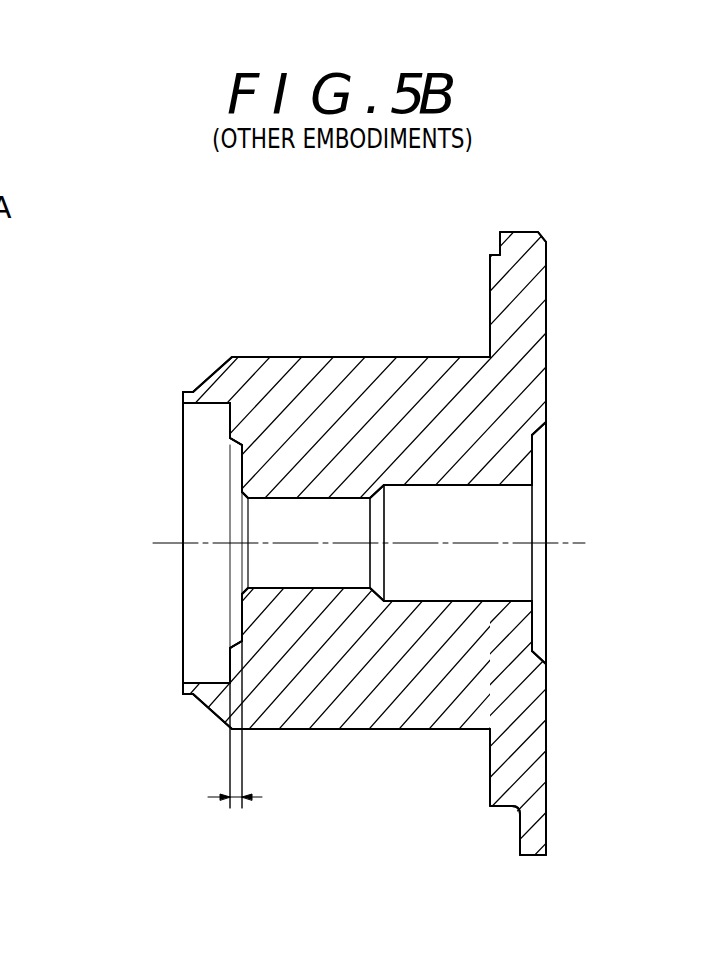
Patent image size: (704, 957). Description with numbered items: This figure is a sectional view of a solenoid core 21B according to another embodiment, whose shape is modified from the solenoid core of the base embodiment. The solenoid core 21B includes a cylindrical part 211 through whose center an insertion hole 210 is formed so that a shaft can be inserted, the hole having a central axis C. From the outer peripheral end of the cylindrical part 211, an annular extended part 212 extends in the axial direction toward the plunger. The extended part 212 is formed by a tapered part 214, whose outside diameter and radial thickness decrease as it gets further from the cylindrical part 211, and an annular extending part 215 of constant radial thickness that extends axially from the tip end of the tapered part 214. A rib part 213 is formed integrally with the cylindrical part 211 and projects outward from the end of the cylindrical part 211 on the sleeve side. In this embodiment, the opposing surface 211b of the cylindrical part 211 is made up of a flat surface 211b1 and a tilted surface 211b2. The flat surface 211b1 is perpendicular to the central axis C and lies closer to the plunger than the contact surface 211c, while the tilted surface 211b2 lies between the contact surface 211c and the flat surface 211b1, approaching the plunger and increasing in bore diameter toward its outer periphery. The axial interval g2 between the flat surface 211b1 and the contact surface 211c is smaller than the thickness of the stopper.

The solenoid core 21B is at (586, 228).
The cylindrical part 211 is at (300, 443).
The extended part 212 is at (236, 282).
The rib part 213 is at (515, 302).
The tapered part 214 is at (225, 382).
The extending part 215 is at (185, 392).
The opposing surface 211b is at (82, 412).
The flat surface 211b1 is at (228, 419).
The tilted surface 211b2 is at (232, 444).
The contact surface 211c is at (240, 475).
The insertion hole 210 is at (258, 558).
The central axis C is at (585, 543).
The axial interval g2 is at (235, 744).